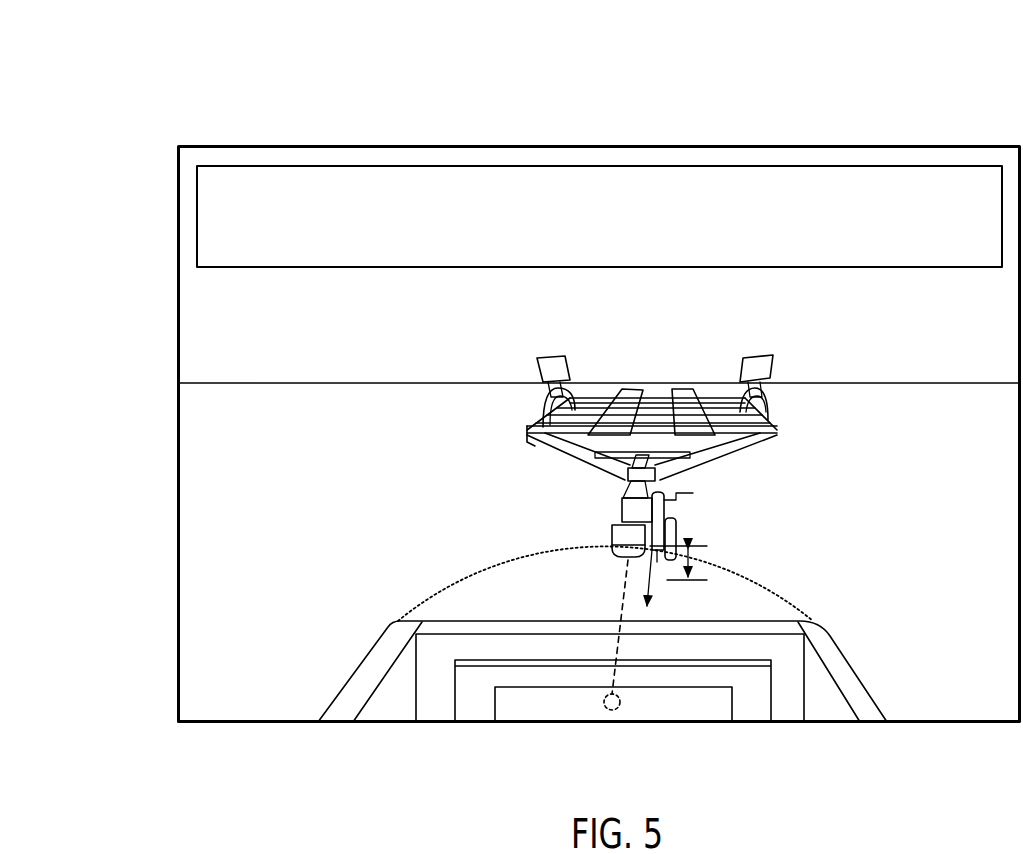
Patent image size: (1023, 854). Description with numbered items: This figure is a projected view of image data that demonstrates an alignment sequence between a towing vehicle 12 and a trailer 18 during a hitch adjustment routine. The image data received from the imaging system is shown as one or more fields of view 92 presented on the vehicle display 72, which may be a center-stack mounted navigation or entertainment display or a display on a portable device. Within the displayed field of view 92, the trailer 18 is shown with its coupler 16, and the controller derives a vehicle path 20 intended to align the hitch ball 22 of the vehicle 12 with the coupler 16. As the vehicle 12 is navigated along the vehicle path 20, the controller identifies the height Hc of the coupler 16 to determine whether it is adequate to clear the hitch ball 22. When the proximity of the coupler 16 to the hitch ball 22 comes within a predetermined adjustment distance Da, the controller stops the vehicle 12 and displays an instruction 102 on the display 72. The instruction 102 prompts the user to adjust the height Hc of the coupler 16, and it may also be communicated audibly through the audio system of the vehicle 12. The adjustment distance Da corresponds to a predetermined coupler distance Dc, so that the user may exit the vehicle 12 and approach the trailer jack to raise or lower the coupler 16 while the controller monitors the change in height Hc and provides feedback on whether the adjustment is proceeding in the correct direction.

The vehicle human-machine interface display 72 is at (330, 73).
The display screen image 92 is at (904, 145).
The notification message box 102 is at (233, 168).
The vehicle 12 is at (895, 657).
The trailer 18 is at (782, 352).
The trailer coupler 16 is at (618, 528).
The hitch path line 20 is at (622, 605).
The hitch ball 22 is at (604, 708).
The coupler height Hc is at (693, 561).
The coupler distance Dc is at (655, 581).
The alignment distance Da is at (490, 572).